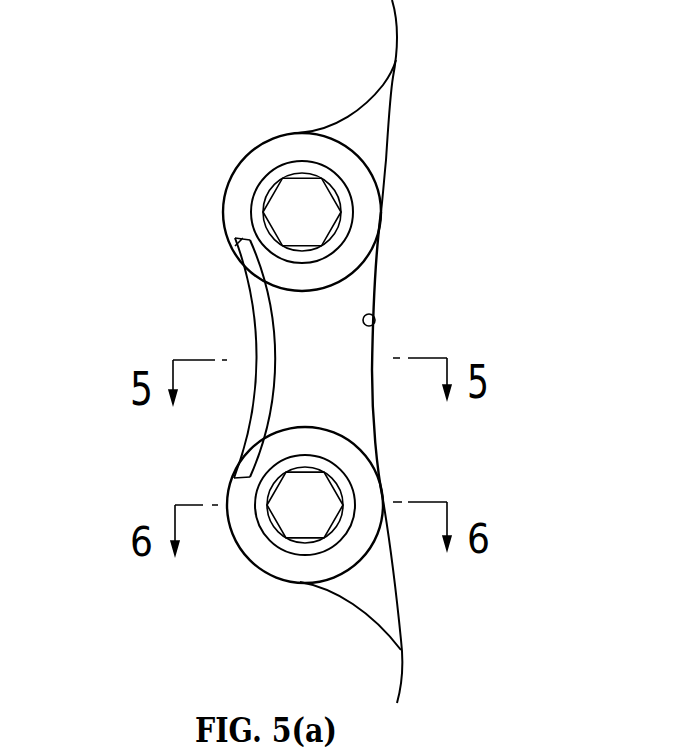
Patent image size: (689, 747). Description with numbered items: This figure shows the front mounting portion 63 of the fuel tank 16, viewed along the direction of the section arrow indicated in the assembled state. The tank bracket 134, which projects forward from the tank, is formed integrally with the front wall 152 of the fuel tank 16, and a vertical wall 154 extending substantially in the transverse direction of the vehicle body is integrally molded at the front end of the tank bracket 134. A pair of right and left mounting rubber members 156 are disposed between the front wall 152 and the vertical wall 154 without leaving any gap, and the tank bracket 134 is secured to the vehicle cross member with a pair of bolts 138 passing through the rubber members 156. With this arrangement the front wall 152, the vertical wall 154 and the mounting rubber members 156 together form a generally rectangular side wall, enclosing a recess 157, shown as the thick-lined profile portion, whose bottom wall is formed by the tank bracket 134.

The fuel tank 16 is at (378, 82).
The front mounting portion 63 is at (104, 183).
The tank bracket 134 is at (378, 122).
The bolts 138 is at (298, 190).
The front wall 152 is at (373, 310).
The vertical wall 154 is at (257, 312).
The mounting rubber members 156 is at (240, 183).
The recess 157 is at (343, 395).